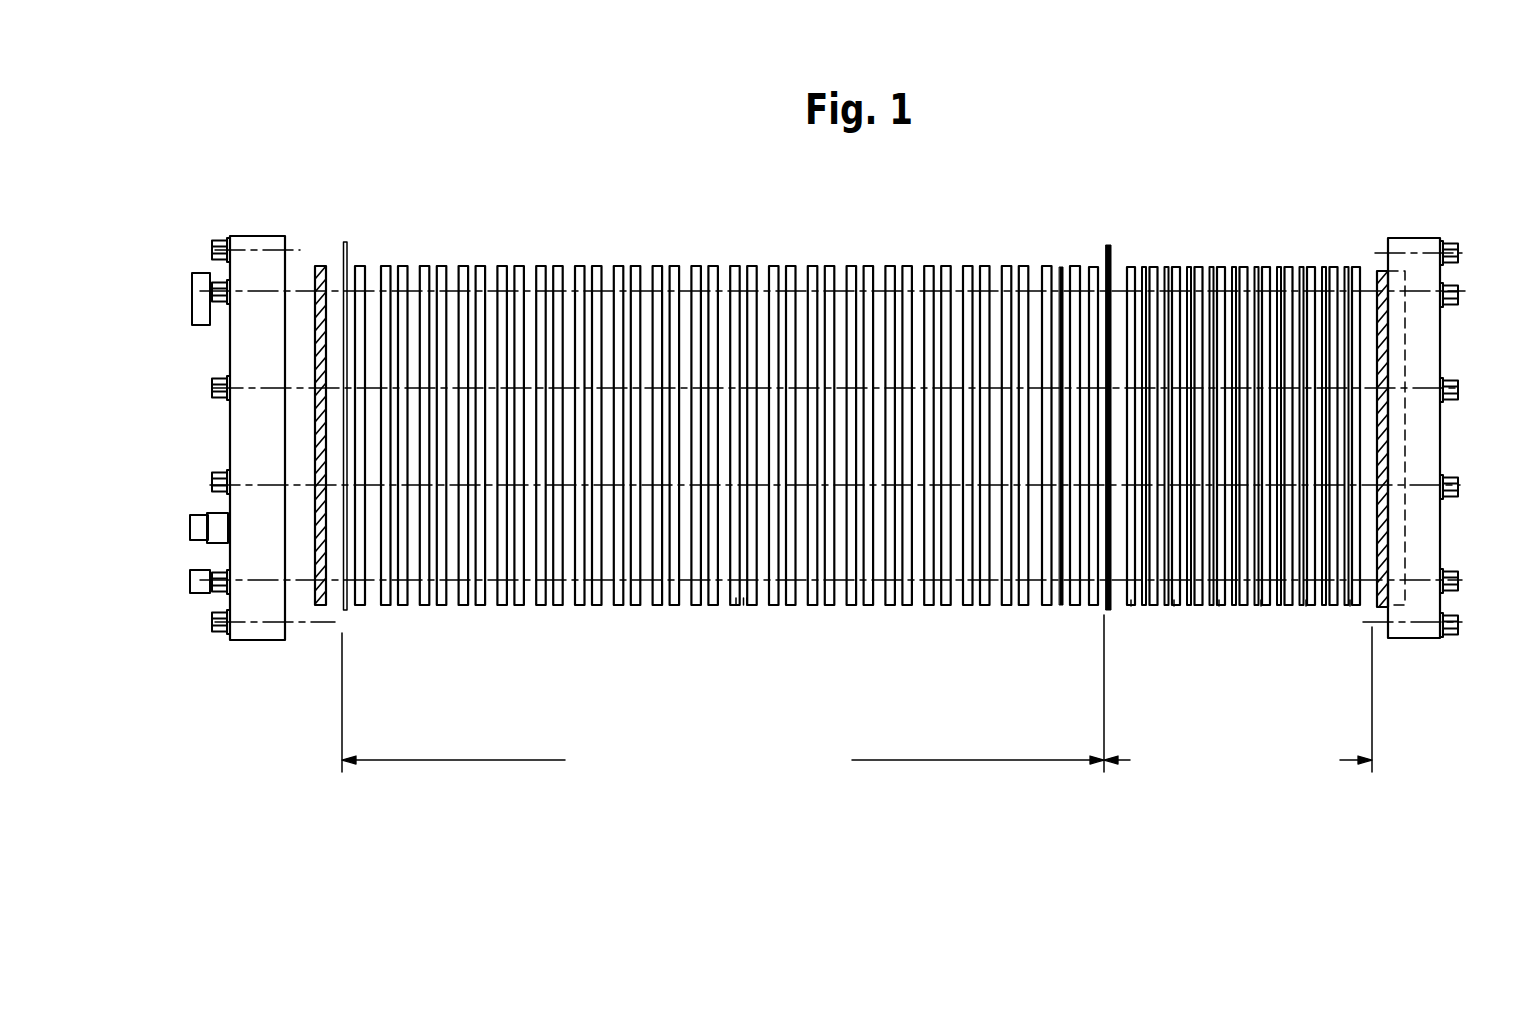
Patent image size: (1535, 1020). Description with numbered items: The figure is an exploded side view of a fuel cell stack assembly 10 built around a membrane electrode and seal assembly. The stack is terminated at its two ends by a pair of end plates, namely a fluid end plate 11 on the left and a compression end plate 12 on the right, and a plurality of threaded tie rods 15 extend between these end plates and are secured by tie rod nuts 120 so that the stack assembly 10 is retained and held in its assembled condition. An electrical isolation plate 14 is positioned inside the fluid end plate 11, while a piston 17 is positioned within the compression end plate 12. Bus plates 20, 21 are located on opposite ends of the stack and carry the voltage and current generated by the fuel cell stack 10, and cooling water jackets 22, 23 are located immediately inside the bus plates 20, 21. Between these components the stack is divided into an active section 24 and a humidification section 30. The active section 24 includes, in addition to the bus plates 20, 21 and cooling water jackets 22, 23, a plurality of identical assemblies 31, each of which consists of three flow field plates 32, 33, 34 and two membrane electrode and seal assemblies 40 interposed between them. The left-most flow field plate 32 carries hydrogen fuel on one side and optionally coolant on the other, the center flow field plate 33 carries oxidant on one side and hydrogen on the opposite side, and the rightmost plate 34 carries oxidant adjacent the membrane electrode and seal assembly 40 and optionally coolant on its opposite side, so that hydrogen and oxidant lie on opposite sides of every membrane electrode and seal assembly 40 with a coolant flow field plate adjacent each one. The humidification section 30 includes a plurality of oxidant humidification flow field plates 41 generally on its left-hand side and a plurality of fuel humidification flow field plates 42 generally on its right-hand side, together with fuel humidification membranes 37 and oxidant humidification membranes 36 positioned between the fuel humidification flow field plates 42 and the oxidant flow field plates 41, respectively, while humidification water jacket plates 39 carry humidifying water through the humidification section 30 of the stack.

The fuel cell stack assembly 10 is at (872, 197).
The fluid end plate 11 is at (258, 632).
The compression end plate 12 is at (1408, 638).
The electrical isolation plate 14 is at (319, 266).
The threaded tie rods 15 is at (258, 290).
The piston 17 is at (1382, 271).
The bus plate 20 is at (347, 243).
The bus plate 21 is at (1109, 246).
The cooling water jacket 22 is at (360, 266).
The cooling water jacket 23 is at (1092, 267).
The active section 24 is at (696, 679).
The humidification section 30 is at (1239, 680).
The assembly 31 is at (508, 266).
The flow field plate 32 is at (729, 606).
The center flow field plate 33 is at (741, 606).
The flow field plate 34 is at (752, 606).
The oxidant humidification membrane 36 is at (1144, 267).
The fuel humidification membrane 37 is at (1331, 267).
The humidification water jacket plate 39 is at (1184, 267).
The membrane electrode and seal assembly 40 is at (735, 606).
The oxidant humidification flow field plate 41 is at (1131, 606).
The fuel humidification flow field plate 42 is at (1261, 606).
The tie rod nuts 120 is at (214, 376).